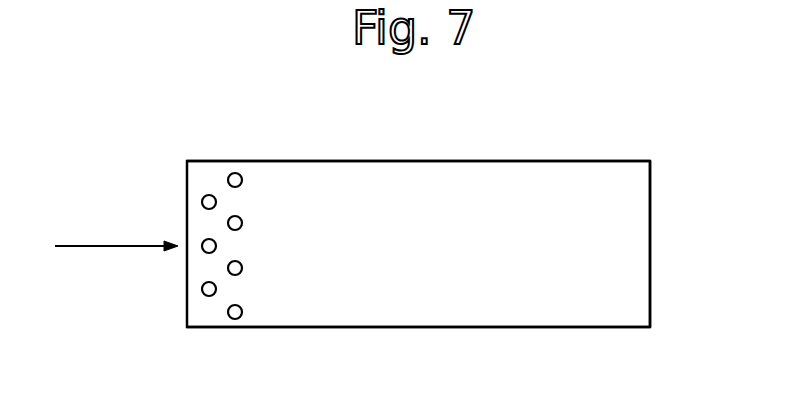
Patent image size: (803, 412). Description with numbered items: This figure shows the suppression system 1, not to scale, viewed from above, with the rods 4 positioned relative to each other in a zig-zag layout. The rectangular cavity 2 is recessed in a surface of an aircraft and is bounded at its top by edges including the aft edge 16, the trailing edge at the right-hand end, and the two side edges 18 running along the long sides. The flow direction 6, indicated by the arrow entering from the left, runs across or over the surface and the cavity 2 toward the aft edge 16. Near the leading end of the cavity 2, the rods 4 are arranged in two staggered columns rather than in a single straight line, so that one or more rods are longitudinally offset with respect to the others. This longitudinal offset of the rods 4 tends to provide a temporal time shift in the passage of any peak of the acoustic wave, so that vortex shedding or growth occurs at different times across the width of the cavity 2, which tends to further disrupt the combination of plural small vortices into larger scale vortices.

The suppression system 1 is at (640, 132).
The cavity 2 is at (538, 190).
The rods 4 is at (242, 180).
The flow direction 6 is at (95, 245).
The aft edge 16 is at (650, 205).
The side edges 18 is at (410, 160).